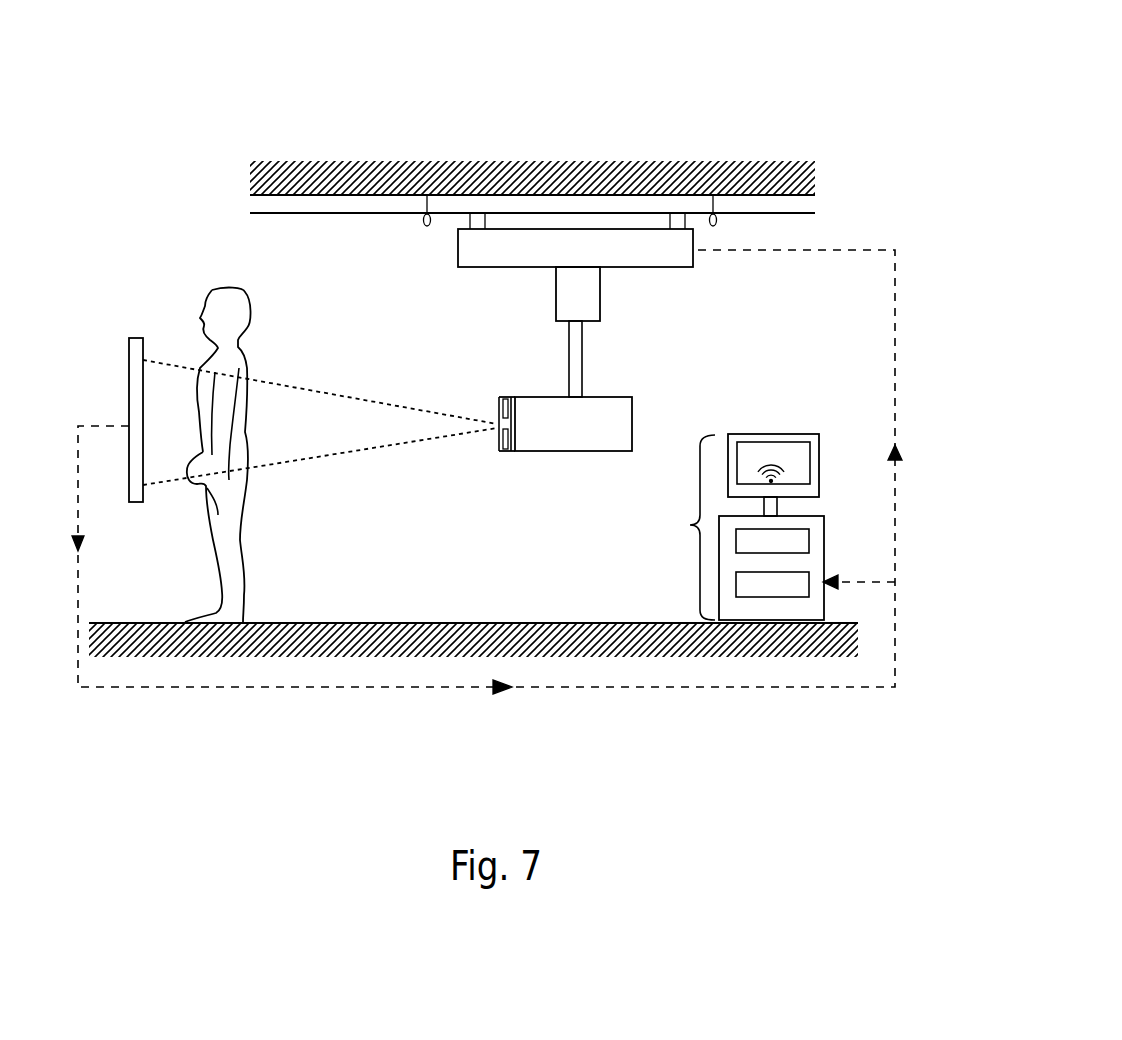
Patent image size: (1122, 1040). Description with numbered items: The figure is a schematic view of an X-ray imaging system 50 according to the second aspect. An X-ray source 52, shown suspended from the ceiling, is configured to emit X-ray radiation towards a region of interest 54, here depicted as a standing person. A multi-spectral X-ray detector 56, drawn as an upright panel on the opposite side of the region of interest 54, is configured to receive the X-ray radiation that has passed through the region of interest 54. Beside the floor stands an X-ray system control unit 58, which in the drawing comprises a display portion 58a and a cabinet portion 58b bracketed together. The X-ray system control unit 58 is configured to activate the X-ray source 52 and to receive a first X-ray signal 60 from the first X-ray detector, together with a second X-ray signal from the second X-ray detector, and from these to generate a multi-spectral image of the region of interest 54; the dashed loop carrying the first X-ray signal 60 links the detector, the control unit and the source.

The X-ray imaging system 50 is at (762, 121).
The X-ray source 52 is at (633, 432).
The region of interest 54 is at (237, 508).
The multi-spectral X-ray detector 56 is at (134, 389).
The X-ray system control unit 58 is at (767, 488).
The monitor / display of computer 58a is at (797, 450).
The computer tower / processing unit 58b is at (826, 567).
The first X-ray signal 60 is at (622, 687).